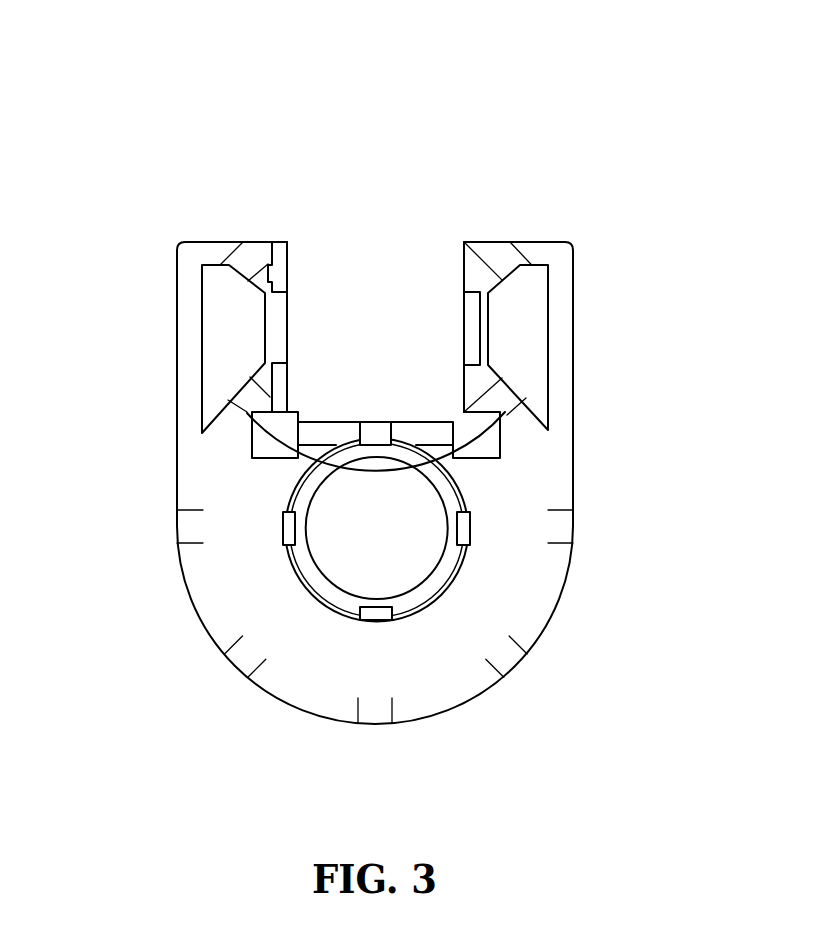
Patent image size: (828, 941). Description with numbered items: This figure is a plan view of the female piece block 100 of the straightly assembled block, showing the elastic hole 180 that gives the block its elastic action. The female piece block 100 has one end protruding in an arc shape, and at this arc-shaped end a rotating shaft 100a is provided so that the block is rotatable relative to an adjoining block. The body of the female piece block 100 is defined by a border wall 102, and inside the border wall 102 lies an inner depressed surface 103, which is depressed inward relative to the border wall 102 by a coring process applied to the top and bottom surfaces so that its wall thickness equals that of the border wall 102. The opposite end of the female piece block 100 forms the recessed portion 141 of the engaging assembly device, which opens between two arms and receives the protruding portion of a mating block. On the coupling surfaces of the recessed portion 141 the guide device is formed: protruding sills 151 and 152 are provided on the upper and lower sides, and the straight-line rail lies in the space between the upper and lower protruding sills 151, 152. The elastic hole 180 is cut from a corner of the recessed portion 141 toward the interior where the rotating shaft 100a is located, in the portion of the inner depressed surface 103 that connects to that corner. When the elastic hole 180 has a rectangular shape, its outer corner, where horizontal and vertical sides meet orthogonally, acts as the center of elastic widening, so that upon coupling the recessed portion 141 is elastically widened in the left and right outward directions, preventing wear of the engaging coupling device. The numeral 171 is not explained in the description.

The female piece block 100 is at (230, 140).
The rotating shaft 100a is at (305, 555).
The border wall 102 is at (292, 693).
The inner depressed surface 103 is at (283, 615).
The recessed portion 141 is at (378, 295).
The protruding sill 151 is at (285, 340).
The protruding sill 152 is at (285, 272).
The hook portion 171 is at (284, 270).
The elastic hole 180 is at (485, 437).